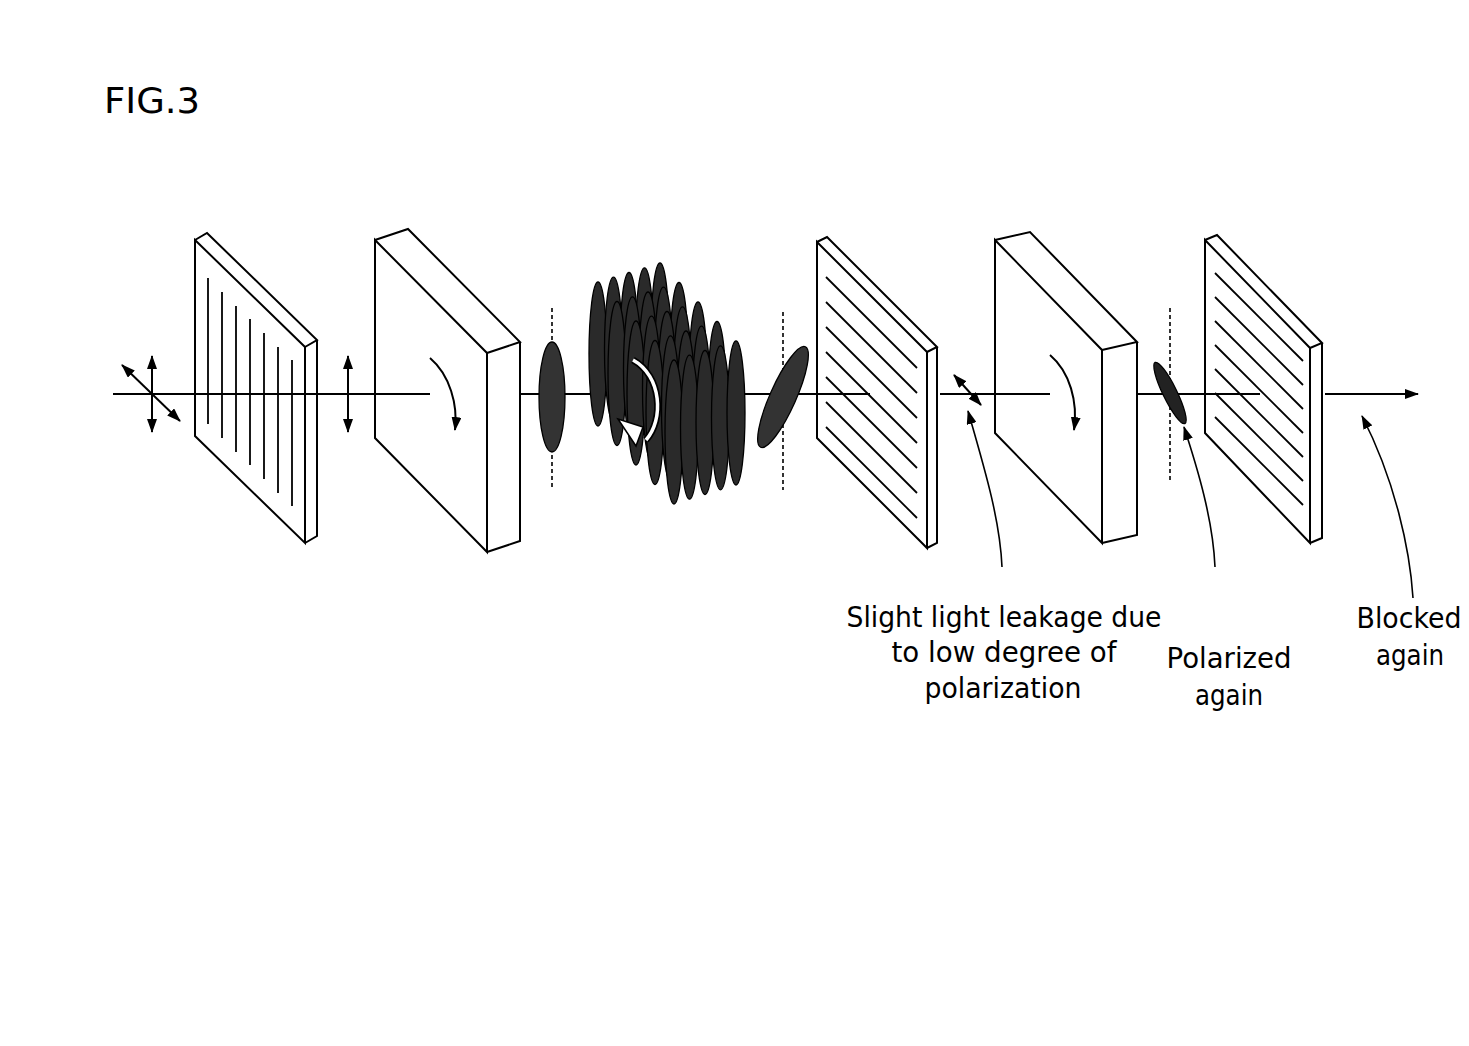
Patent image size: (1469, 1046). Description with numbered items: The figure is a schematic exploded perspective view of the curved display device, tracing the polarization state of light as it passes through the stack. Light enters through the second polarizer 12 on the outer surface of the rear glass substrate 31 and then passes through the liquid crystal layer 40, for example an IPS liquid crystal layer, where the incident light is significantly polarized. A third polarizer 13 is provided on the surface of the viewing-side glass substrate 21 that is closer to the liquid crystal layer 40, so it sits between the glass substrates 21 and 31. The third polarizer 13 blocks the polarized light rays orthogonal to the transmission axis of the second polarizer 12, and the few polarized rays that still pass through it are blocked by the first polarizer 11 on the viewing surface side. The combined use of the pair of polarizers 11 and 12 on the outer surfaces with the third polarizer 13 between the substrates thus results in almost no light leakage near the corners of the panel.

The second polarizer 12 is at (206, 236).
The glass substrate 31 is at (406, 247).
The liquid crystal layer 40 is at (621, 255).
The third polarizer 13 is at (831, 247).
The glass substrate 21 is at (1018, 245).
The first polarizer 11 is at (1220, 245).